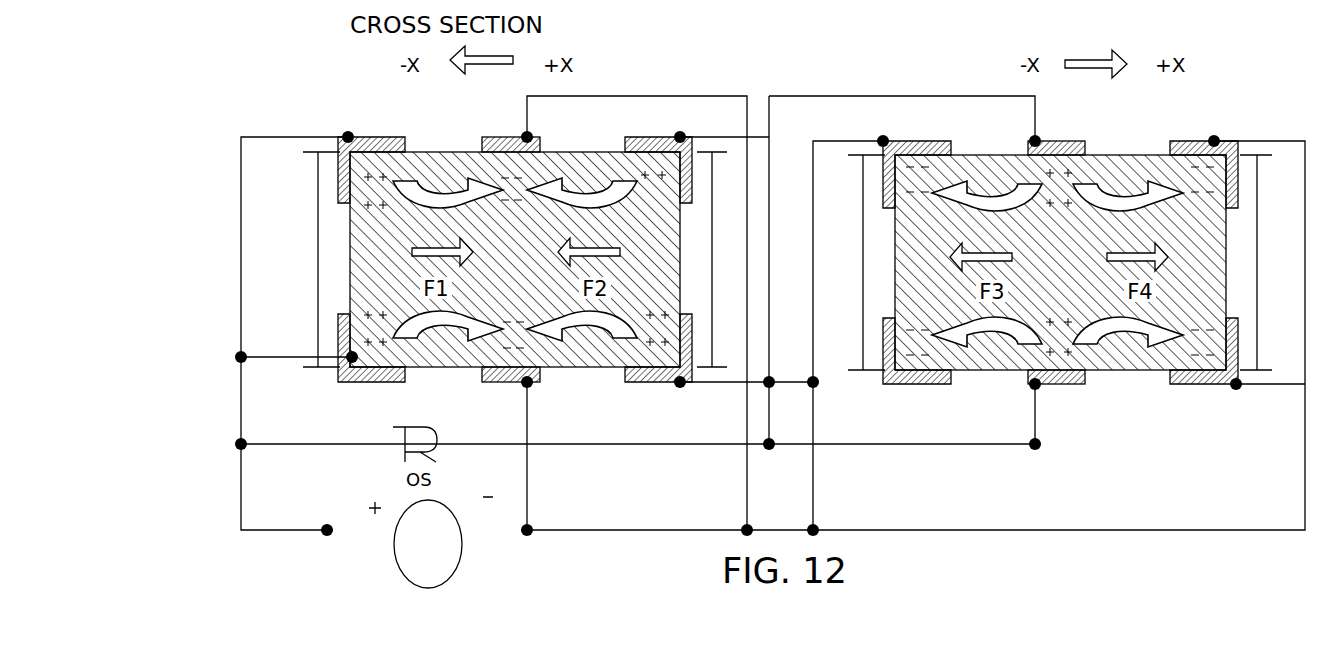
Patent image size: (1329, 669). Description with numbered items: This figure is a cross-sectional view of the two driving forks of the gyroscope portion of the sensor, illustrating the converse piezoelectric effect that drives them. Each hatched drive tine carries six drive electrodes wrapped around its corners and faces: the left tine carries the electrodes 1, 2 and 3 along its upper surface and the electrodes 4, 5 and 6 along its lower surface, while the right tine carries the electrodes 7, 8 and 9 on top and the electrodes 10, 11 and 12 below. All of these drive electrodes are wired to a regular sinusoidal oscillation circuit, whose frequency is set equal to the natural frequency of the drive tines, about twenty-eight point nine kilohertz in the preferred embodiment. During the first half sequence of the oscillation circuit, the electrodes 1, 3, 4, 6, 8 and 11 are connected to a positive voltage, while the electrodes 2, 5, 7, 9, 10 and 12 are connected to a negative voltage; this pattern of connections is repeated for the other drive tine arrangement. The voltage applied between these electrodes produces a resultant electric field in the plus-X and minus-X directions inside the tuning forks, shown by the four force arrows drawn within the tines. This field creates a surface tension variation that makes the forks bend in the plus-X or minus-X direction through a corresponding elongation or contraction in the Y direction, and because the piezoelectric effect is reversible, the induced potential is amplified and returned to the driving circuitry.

The electrode 1 is at (370, 150).
The electrode 2 is at (511, 125).
The electrode 3 is at (658, 150).
The electrode 4 is at (370, 372).
The electrode 5 is at (511, 398).
The electrode 6 is at (658, 372).
The electrode 7 is at (917, 153).
The electrode 8 is at (1056, 126).
The electrode 9 is at (1204, 153).
The electrode 10 is at (917, 374).
The electrode 11 is at (1056, 400).
The electrode 12 is at (1204, 374).